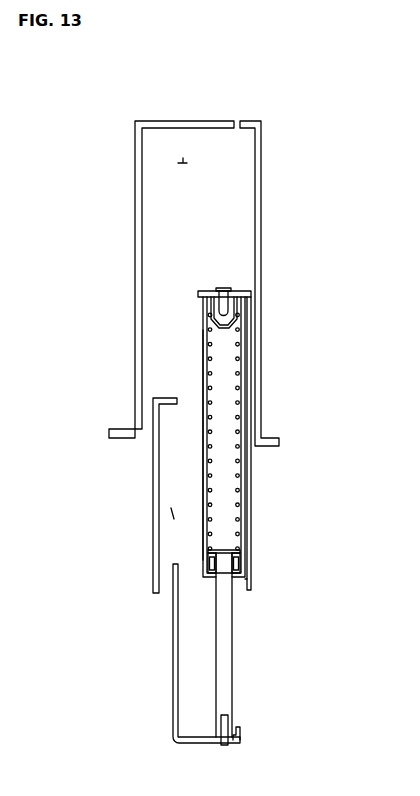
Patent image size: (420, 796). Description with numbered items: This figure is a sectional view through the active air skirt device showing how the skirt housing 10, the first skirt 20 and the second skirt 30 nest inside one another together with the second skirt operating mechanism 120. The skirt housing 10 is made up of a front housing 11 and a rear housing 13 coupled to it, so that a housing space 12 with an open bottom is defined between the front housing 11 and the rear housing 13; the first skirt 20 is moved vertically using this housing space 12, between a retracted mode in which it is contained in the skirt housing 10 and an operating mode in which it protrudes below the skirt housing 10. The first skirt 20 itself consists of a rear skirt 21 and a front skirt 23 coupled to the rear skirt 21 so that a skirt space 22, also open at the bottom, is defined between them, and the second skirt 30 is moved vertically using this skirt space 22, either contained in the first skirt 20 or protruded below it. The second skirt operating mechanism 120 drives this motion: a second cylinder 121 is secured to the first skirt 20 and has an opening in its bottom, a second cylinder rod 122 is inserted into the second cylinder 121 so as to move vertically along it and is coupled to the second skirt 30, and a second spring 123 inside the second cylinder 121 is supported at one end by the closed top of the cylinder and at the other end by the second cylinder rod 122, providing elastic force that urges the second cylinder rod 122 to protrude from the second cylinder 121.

The skirt housing 10 is at (128, 118).
The front housing 11 is at (140, 152).
The housing space 12 is at (183, 158).
The rear housing 13 is at (257, 172).
The first skirt 20 is at (144, 564).
The rear skirt 21 is at (250, 508).
The skirt space 22 is at (172, 515).
The front skirt 23 is at (155, 470).
The second skirt 30 is at (173, 697).
The second skirt operating mechanism 120 is at (197, 320).
The second cylinder 121 is at (207, 379).
The second cylinder rod 122 is at (227, 653).
The second spring 123 is at (238, 388).